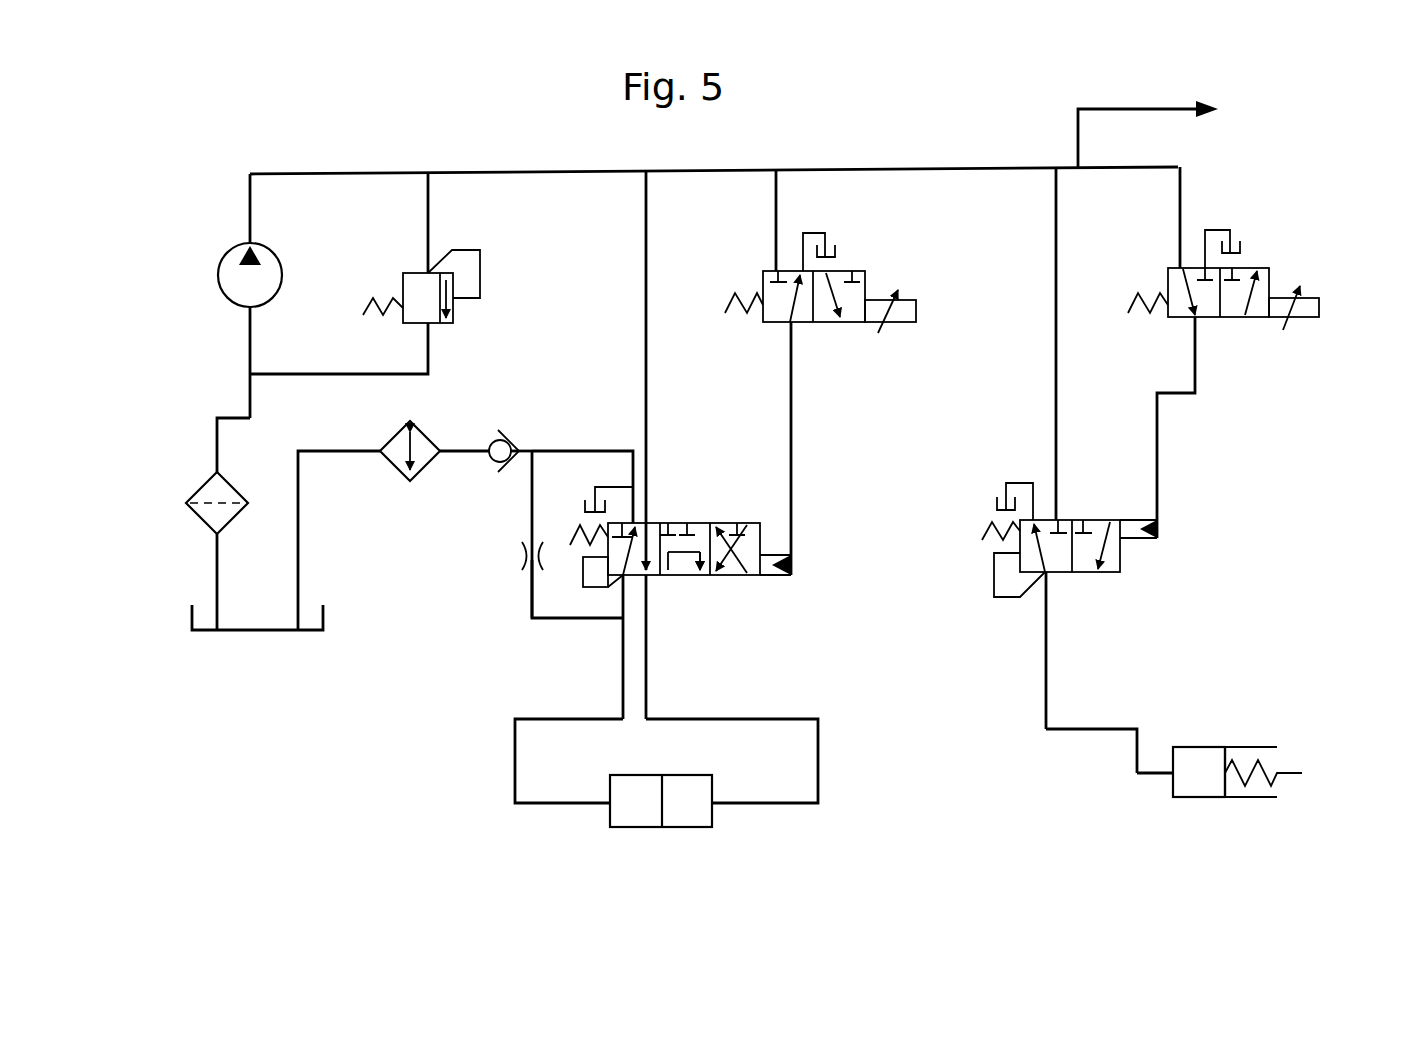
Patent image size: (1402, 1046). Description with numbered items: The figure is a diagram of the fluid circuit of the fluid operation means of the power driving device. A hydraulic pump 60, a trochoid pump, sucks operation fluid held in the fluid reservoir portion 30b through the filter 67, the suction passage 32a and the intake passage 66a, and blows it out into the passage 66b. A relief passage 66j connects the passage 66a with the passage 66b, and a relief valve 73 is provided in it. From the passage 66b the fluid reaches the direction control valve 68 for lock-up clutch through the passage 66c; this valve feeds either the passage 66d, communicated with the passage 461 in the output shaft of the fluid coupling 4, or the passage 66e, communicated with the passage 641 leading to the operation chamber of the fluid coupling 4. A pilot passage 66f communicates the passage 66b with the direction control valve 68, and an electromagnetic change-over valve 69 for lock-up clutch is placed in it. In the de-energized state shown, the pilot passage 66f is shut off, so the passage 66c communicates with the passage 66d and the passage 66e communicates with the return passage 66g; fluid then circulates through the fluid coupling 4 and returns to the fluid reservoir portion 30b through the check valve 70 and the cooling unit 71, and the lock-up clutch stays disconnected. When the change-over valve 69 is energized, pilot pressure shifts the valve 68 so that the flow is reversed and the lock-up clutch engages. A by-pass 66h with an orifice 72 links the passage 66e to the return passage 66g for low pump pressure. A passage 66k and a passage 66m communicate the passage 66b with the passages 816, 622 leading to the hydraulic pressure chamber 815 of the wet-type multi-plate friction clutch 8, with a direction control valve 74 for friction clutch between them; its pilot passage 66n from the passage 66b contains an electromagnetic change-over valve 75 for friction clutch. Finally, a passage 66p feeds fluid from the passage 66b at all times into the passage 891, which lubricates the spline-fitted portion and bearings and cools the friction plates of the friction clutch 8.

The fluid coupling 4 is at (681, 832).
The wet-type multi-plate friction clutch 8 is at (1242, 729).
The fluid reservoir portion 30b is at (190, 615).
The suction passage 32a is at (213, 435).
The hydraulic pump 60 is at (217, 262).
The intake passage 66a is at (248, 349).
The passage 66b is at (330, 172).
The passage 66c is at (643, 300).
The passage 66d is at (650, 636).
The passage 66e is at (620, 652).
The pilot passage 66f is at (795, 420).
The return passage 66g is at (556, 449).
The by-pass 66h is at (531, 607).
The relief passage 66j is at (430, 352).
The passage 66k is at (1053, 340).
The passage 66m is at (1044, 672).
The pilot passage 66n is at (1197, 368).
The passage 66p is at (1075, 137).
The filter 67 is at (196, 487).
The direction control valve for lock-up clutch 68 is at (723, 516).
The electromagnetic change-over valve for lock-up clutch 69 is at (906, 282).
The check valve 70 is at (515, 430).
The cooling unit 71 is at (387, 472).
The orifice 72 is at (519, 548).
The relief valve 73 is at (400, 265).
The direction control valve for friction clutch 74 is at (1111, 582).
The electromagnetic change-over valve for friction clutch 75 is at (1286, 254).
The passage 461 is at (776, 806).
The passage 641 is at (557, 806).
The passage 622 is at (1085, 728).
The hydraulic pressure chamber 815 is at (1200, 779).
The passage 816 is at (1155, 777).
The passage 891 is at (1178, 103).